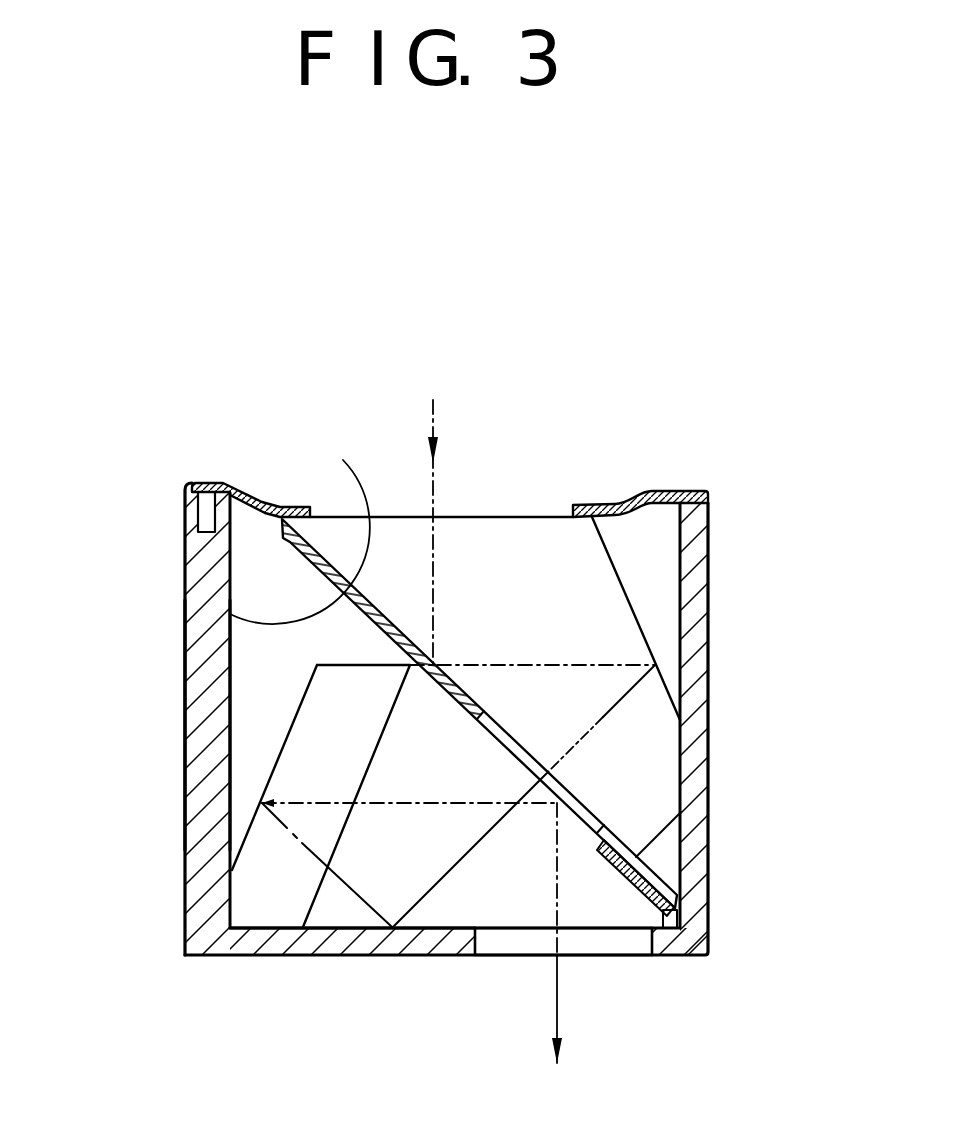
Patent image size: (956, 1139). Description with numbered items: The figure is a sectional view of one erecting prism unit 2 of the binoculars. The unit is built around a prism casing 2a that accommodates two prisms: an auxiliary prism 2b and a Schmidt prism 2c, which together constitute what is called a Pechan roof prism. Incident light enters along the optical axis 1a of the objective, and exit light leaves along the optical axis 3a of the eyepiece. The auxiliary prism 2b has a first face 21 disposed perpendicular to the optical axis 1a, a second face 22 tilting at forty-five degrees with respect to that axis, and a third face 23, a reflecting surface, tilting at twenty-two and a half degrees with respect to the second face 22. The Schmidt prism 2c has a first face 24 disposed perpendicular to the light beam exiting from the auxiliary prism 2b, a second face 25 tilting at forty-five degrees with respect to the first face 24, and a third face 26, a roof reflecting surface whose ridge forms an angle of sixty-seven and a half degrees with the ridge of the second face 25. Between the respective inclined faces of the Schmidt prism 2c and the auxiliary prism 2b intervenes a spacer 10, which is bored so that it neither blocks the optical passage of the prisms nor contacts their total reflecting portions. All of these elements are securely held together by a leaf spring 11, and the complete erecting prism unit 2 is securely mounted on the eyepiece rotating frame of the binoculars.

The optical axis of the objective 1a is at (428, 440).
The erecting prism unit 2 is at (824, 641).
The prism casing 2a is at (203, 718).
The auxiliary prism 2b is at (485, 548).
The Schmidt prism 2c is at (392, 873).
The optical axis of the eyepiece 3a is at (563, 1002).
The spacer 10 is at (230, 614).
The leaf spring 11 is at (262, 503).
The first face of the auxiliary prism 21 is at (542, 513).
The second face of the auxiliary prism 22 is at (343, 460).
The third face of the auxiliary prism 23 is at (613, 555).
The first face of the Schmidt prism 24 is at (587, 843).
The second face of the Schmidt prism 25 is at (512, 930).
The third face of the Schmidt prism 26 is at (274, 769).